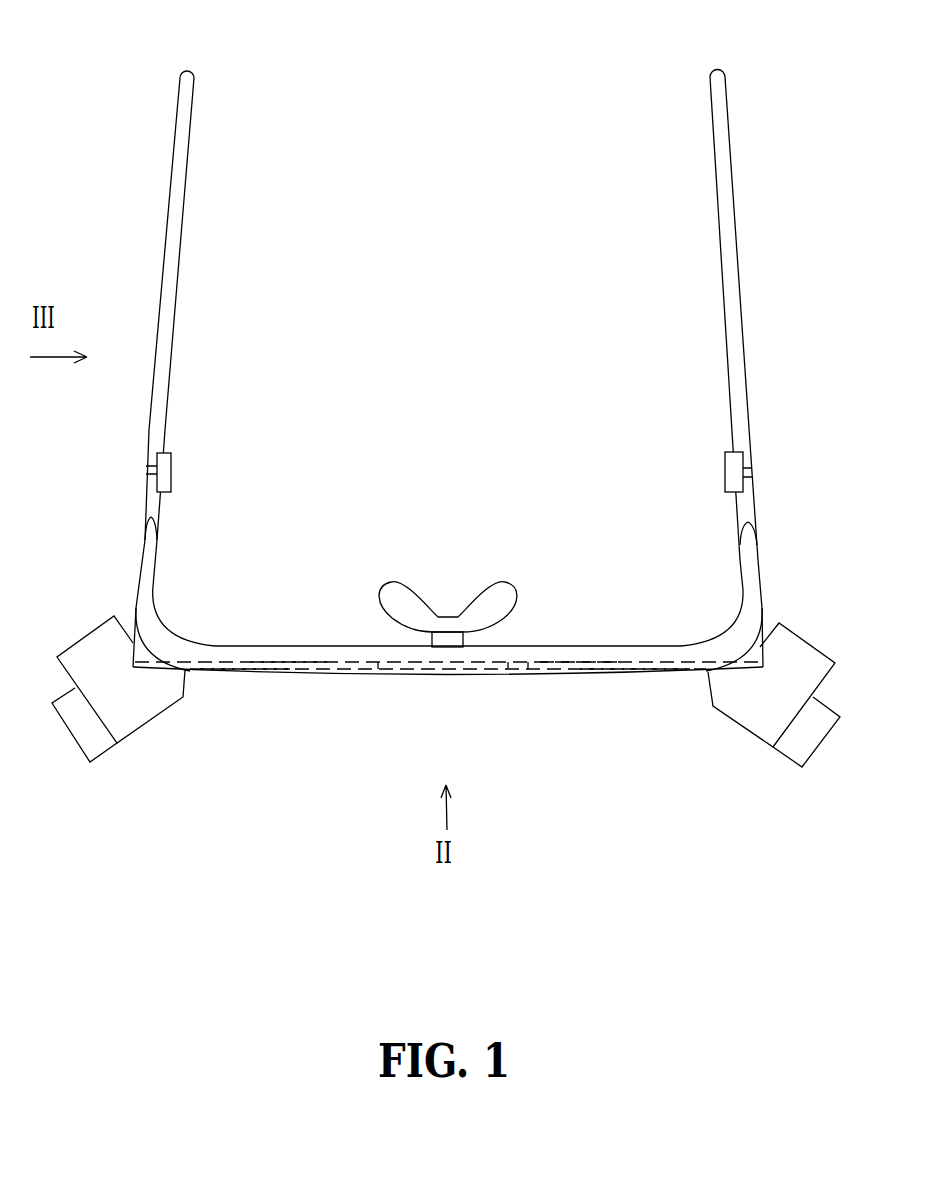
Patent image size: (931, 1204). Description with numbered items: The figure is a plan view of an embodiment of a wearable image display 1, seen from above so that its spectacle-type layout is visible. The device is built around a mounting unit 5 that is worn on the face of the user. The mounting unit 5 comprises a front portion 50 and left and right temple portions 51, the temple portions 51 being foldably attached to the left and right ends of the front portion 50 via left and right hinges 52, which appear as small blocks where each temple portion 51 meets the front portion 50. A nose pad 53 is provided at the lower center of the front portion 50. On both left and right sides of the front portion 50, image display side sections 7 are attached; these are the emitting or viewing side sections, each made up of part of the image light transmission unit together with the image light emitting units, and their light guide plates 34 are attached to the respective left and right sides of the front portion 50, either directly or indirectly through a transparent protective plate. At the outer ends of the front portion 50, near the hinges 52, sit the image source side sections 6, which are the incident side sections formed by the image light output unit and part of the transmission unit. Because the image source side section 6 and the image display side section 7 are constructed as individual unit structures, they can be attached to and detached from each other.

The wearable image display 1 is at (470, 87).
The mounting unit 5 is at (411, 683).
The image source side section 6 is at (133, 753).
The image display side section 7 is at (245, 670).
The light guide plate 34 is at (285, 668).
The front portion 50 is at (465, 667).
The temple portion 51 is at (166, 238).
The hinge 52 is at (173, 460).
The nose pad 53 is at (443, 615).